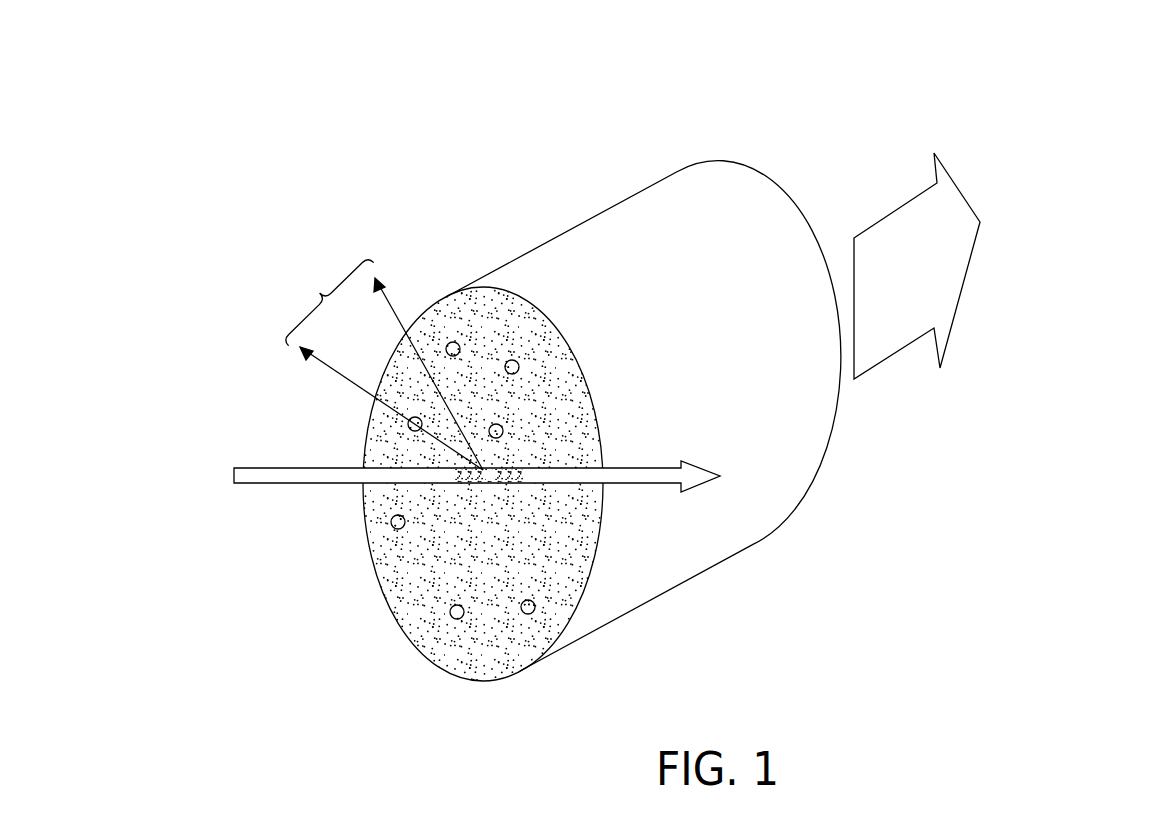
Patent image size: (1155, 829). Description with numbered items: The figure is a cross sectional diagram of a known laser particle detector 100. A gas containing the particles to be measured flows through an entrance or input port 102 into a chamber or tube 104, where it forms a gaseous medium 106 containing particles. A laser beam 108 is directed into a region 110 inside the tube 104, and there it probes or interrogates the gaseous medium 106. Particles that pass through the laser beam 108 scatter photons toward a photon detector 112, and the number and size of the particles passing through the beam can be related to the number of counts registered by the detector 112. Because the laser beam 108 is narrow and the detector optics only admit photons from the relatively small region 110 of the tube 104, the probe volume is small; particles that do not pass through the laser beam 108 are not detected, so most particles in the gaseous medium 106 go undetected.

The laser particle detector 100 is at (590, 351).
The input port 102 is at (407, 572).
The tube 104 is at (612, 204).
The gaseous medium 106 is at (540, 540).
The laser beam 108 is at (262, 465).
The region 110 is at (513, 467).
The photon detector 112 is at (250, 270).